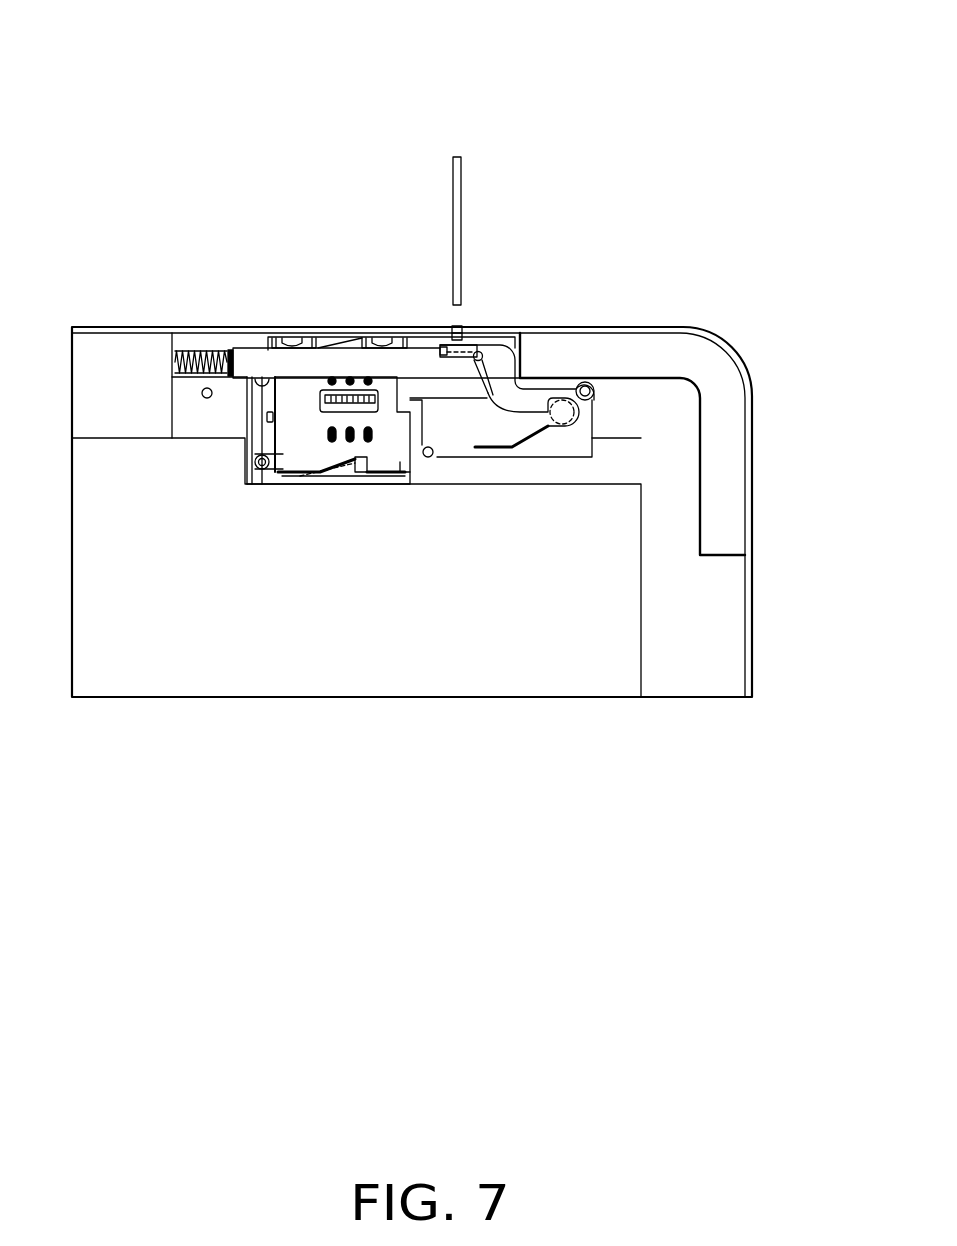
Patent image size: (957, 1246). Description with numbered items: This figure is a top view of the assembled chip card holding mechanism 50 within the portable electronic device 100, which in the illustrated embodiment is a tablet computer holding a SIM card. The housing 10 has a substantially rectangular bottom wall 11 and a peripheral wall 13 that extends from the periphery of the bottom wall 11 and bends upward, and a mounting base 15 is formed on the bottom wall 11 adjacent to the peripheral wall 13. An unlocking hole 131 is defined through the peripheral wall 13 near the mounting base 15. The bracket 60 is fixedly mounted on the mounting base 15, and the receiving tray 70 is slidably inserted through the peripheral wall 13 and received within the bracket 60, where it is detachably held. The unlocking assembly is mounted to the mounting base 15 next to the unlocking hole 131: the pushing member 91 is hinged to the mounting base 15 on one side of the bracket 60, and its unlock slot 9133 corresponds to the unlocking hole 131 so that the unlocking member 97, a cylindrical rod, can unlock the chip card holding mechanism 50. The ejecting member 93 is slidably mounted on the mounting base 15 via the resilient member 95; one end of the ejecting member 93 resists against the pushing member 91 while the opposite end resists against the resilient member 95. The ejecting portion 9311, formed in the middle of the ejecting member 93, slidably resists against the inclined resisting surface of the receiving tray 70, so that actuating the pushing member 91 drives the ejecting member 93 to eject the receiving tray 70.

The portable electronic device 100 is at (467, 32).
The housing 10 is at (778, 452).
The bottom wall 11 is at (573, 665).
The peripheral wall 13 is at (642, 330).
The mounting base 15 is at (428, 468).
The chip card holding mechanism 50 is at (262, 312).
The bracket 60 is at (385, 457).
The receiving tray 70 is at (297, 335).
The pushing member 91 is at (522, 398).
The ejecting member 93 is at (310, 355).
The resilient member 95 is at (172, 365).
The unlocking member 97 is at (458, 195).
The unlocking hole 131 is at (458, 326).
The unlock slot 9133 is at (480, 350).
The ejecting portion 9311 is at (357, 348).